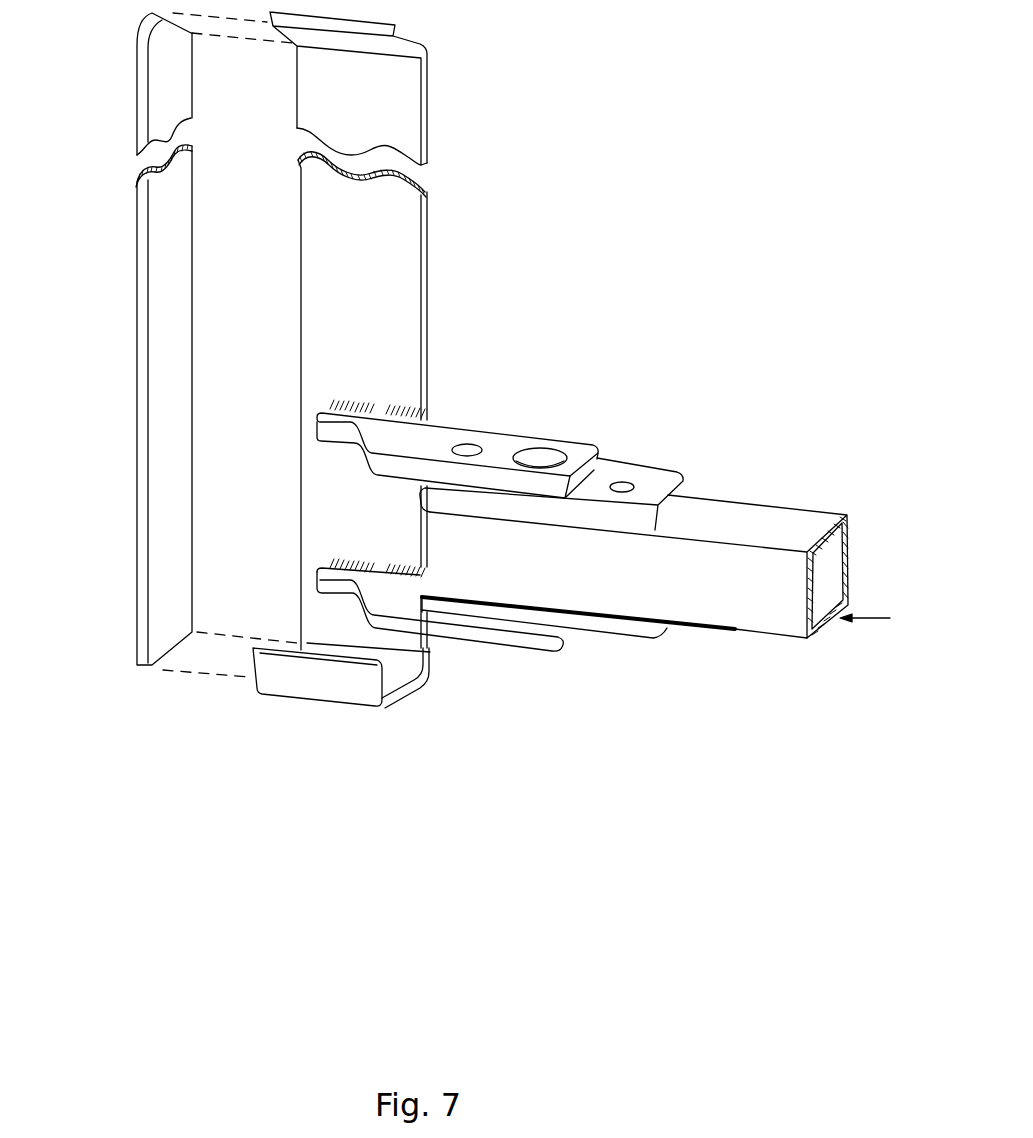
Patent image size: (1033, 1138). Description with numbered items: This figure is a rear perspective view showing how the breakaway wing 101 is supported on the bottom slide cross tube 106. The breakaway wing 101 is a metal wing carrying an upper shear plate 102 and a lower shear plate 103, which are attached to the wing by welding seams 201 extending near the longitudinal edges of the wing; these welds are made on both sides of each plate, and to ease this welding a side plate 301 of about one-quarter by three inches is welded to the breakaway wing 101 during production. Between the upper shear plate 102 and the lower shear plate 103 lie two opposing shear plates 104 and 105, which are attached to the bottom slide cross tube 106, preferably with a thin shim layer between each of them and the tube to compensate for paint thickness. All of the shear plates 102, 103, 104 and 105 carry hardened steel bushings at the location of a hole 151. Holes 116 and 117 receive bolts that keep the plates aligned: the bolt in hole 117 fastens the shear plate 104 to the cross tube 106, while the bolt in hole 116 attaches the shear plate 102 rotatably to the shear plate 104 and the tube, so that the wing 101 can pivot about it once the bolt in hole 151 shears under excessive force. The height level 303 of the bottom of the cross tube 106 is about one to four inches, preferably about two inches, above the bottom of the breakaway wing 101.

The breakaway wing 101 is at (412, 142).
The upper shear plate 102 is at (325, 427).
The lower shear plate 103 is at (490, 640).
The shear plate 104 is at (415, 497).
The shear plate 105 is at (596, 628).
The bottom slide cross tube 106 is at (785, 623).
The hole 116 is at (476, 443).
The hole 117 is at (630, 482).
The hole 151 is at (545, 455).
The welding seam 201 is at (369, 385).
The side plate 301 is at (128, 212).
The height level 303 is at (742, 646).